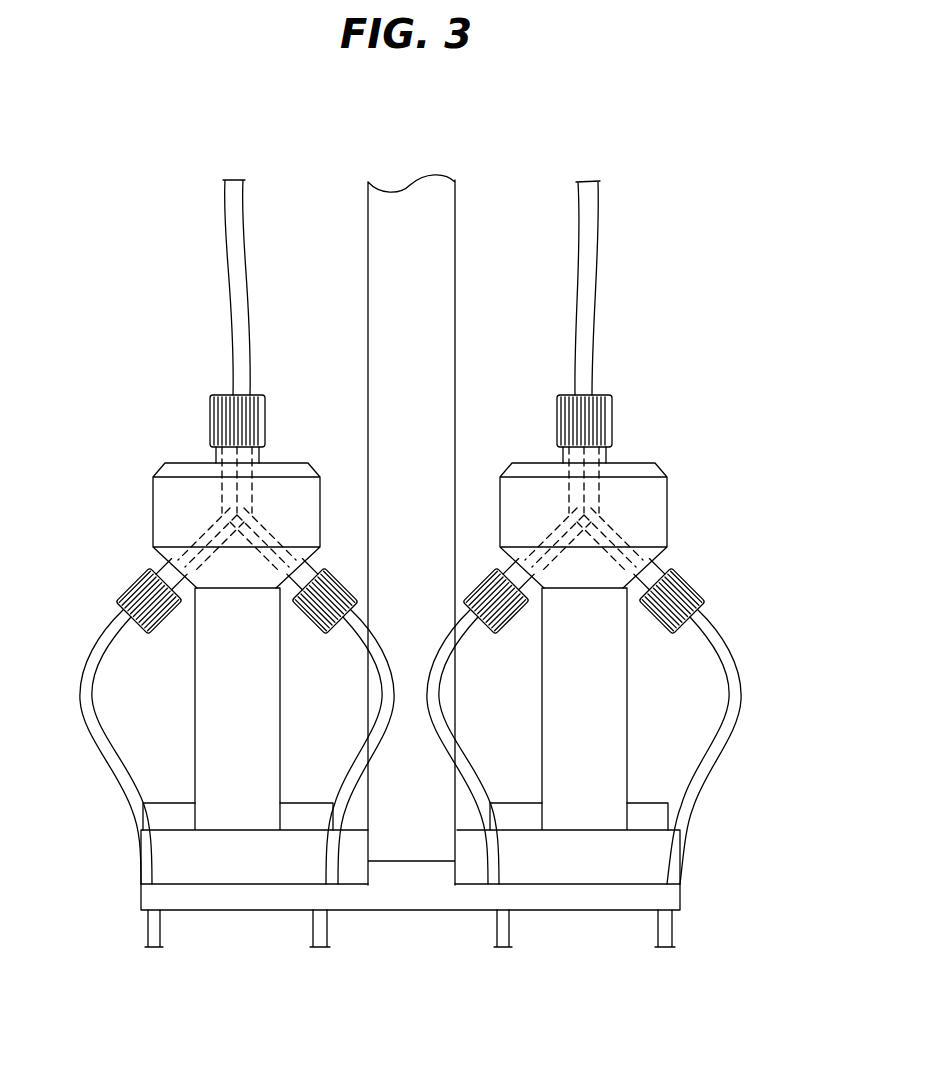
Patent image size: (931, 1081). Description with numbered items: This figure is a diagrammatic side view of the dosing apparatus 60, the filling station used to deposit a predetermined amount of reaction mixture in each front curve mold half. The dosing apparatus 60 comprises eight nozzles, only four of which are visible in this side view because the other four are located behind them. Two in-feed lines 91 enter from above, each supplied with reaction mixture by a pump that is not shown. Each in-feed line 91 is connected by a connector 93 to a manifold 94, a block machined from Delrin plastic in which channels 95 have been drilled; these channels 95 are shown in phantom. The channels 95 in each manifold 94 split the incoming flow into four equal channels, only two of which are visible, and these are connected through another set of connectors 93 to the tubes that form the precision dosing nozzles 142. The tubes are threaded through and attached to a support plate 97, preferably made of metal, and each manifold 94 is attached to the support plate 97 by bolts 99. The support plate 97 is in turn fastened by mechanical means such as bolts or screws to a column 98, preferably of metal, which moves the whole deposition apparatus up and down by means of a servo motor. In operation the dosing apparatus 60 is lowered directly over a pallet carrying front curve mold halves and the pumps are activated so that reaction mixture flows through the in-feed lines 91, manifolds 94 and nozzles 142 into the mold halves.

The dosing apparatus 60 is at (764, 250).
The in-feed line 91 is at (240, 328).
The connector 93 is at (237, 423).
The manifold 94 is at (167, 490).
The channel 95 is at (232, 516).
The support plate 97 is at (237, 903).
The column 98 is at (413, 205).
The bolt 99 is at (160, 814).
The precision dosing nozzle 142 is at (667, 933).